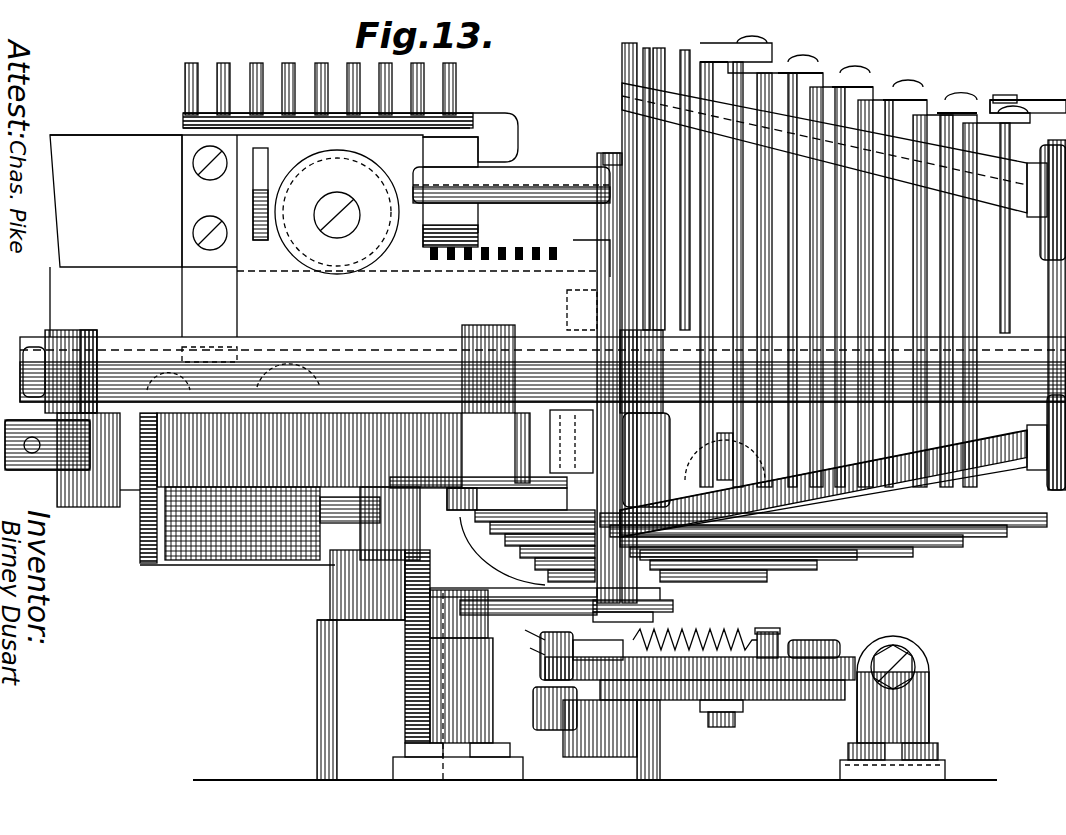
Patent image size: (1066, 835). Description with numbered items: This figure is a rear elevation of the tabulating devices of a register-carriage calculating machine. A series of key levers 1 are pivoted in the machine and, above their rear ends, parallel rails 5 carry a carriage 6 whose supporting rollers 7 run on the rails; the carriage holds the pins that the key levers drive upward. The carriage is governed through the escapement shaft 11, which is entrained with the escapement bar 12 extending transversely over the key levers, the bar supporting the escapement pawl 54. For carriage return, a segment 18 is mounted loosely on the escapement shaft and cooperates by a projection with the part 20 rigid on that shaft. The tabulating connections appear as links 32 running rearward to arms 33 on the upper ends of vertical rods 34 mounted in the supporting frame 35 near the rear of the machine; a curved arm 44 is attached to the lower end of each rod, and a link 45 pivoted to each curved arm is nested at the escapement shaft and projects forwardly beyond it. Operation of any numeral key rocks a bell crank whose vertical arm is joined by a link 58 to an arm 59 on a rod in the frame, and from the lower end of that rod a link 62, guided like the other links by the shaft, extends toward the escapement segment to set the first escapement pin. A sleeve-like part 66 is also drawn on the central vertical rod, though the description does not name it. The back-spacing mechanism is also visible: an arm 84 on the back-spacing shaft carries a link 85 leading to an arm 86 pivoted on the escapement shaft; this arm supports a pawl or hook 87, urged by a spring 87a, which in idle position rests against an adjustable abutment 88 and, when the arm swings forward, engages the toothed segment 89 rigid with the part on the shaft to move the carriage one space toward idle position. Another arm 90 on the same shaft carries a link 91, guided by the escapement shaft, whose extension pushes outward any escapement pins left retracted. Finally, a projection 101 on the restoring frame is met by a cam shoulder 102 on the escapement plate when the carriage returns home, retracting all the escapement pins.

The key lever 1 is at (268, 562).
The rail 5 is at (330, 262).
The carriage 6 is at (116, 201).
The supporting roller 7 is at (337, 212).
The escapement shaft 11 is at (453, 666).
The escapement bar 12 is at (267, 488).
The segment 18 is at (525, 630).
The part rigid with the escapement shaft 20 is at (522, 648).
The link 32 is at (900, 75).
The arm 33 is at (992, 105).
The vertical rod 34 is at (845, 330).
The supporting frame 35 is at (844, 171).
The curved arm 44 is at (950, 535).
The link 45 is at (1015, 508).
The escapement pawl 54 is at (725, 446).
The link 58 is at (757, 50).
The arm 59 is at (712, 58).
The link 62 is at (666, 387).
The sleeve 66 is at (610, 458).
The arm 84 is at (547, 719).
The link 85 is at (712, 722).
The arm 86 is at (700, 718).
The pawl or hook 87 is at (852, 657).
The spring 87a is at (748, 638).
The adjustable abutment 88 is at (897, 682).
The toothed segment 89 is at (555, 670).
The arm 90 is at (507, 592).
The link 91 is at (650, 600).
The projection 101 is at (521, 536).
The cam shoulder 102 is at (443, 489).